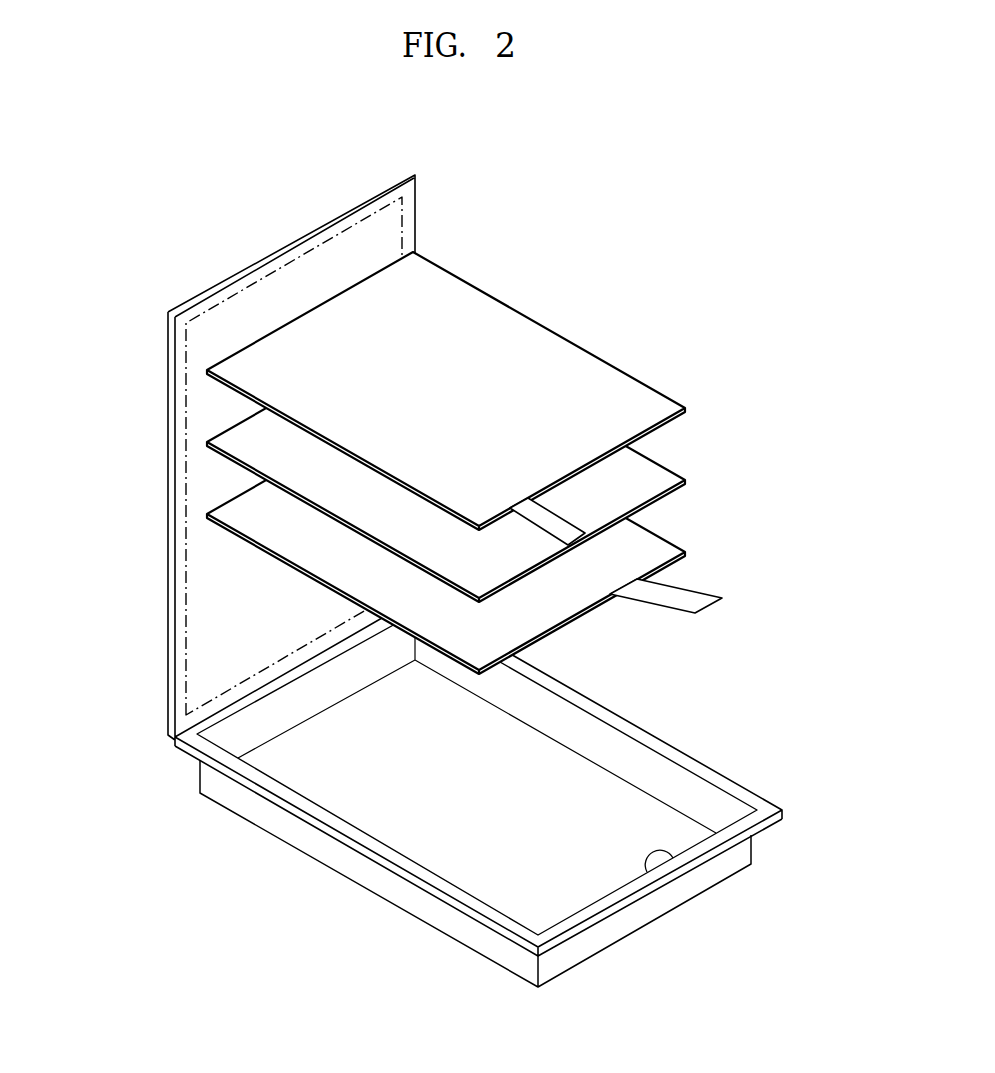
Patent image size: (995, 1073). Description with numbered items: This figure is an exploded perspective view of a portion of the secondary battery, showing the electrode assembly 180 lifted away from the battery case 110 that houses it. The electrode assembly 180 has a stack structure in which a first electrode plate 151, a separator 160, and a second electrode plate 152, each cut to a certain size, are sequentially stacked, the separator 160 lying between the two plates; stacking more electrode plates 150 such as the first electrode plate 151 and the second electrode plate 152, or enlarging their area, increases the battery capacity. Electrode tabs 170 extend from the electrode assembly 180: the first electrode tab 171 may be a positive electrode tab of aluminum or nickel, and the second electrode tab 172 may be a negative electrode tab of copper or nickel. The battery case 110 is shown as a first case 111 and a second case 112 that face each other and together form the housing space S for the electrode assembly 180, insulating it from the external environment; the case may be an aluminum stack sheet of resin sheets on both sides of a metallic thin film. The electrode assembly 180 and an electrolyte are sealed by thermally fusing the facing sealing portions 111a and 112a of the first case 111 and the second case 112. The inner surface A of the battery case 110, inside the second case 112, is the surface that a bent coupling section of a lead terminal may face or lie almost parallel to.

The battery case 110 is at (168, 823).
The first case 111 is at (167, 524).
The sealing portion of the first case 111a is at (295, 255).
The second case 112 is at (487, 947).
The sealing portion of the second case 112a is at (450, 893).
The electrode plates 150 is at (511, 463).
The first electrode plate 151 is at (658, 544).
The second electrode plate 152 is at (658, 400).
The separator 160 is at (660, 473).
The electrode tab 170 is at (511, 461).
The first electrode tab 171 is at (700, 599).
The second electrode tab 172 is at (568, 543).
The electrode assembly 180 is at (587, 305).
The housing space S is at (436, 807).
The inner surface of the battery case A is at (670, 855).